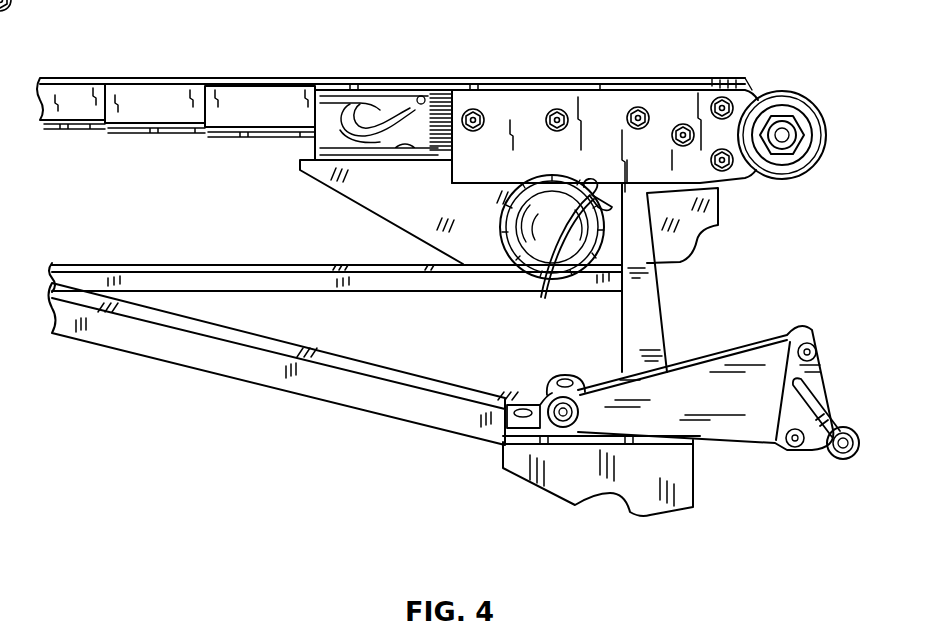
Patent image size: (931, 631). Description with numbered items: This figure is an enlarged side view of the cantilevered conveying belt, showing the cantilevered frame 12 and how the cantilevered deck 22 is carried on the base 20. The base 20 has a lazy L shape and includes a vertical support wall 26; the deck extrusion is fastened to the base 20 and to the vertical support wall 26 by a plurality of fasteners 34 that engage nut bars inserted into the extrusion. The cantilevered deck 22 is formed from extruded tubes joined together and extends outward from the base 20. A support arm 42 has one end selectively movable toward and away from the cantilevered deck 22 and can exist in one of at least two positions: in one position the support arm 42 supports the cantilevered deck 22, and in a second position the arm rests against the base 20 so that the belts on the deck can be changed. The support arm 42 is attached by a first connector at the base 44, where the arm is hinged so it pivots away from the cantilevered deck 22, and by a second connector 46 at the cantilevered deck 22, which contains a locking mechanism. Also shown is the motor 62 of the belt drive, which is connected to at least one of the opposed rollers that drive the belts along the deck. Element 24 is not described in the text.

The cantilevered frame 12 is at (157, 404).
The base 20 is at (384, 366).
The cantilevered deck 22 is at (143, 77).
The link arm 24 is at (643, 298).
The vertical support wall 26 is at (444, 205).
The fasteners 34 is at (646, 112).
The support arm 42 is at (690, 372).
The first connector at the base 44 is at (548, 402).
The second connector 46 is at (578, 182).
The motor 62 is at (566, 245).